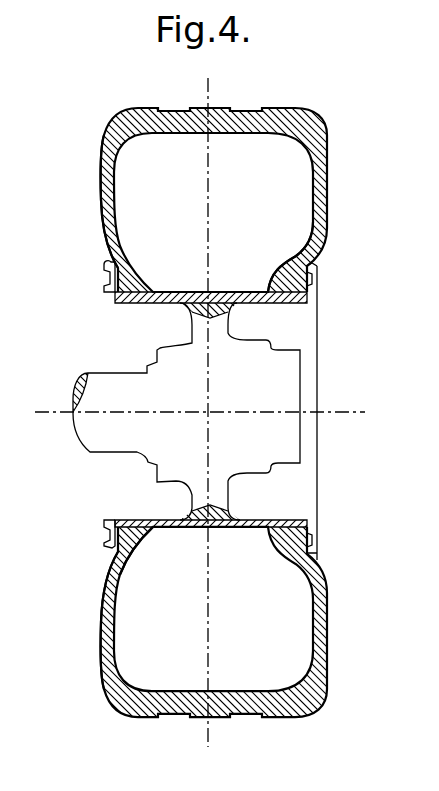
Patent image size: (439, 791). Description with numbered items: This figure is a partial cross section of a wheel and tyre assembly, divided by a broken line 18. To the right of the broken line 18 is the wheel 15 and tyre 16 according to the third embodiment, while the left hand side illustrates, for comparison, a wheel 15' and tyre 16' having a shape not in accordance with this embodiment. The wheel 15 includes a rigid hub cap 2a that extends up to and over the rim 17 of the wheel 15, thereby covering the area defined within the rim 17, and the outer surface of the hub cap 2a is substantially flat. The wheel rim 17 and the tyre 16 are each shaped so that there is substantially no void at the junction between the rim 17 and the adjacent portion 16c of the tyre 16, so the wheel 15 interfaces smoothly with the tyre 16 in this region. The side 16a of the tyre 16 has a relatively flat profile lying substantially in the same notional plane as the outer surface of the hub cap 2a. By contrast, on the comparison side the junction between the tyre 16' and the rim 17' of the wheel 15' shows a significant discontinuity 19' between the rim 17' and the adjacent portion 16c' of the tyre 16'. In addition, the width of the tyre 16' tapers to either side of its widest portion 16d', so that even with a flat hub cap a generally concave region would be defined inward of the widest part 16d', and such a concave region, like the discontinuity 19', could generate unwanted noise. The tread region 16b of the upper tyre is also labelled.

The hub cap 2a is at (318, 333).
The wheel 15 is at (262, 411).
The wheel 15' is at (219, 395).
The tyre 16 is at (219, 395).
The tyre 16' is at (219, 395).
The side of the tyre 16a is at (330, 660).
The tread of upper tire 16b is at (255, 115).
The portion of the tyre 16c is at (326, 257).
The portion of the tyre 16c' is at (159, 563).
The widest portion of the tyre 16d' is at (60, 415).
The wheel rim 17 is at (219, 395).
The rim 17' is at (219, 395).
The broken line 18 is at (213, 738).
The discontinuity 19' is at (72, 419).